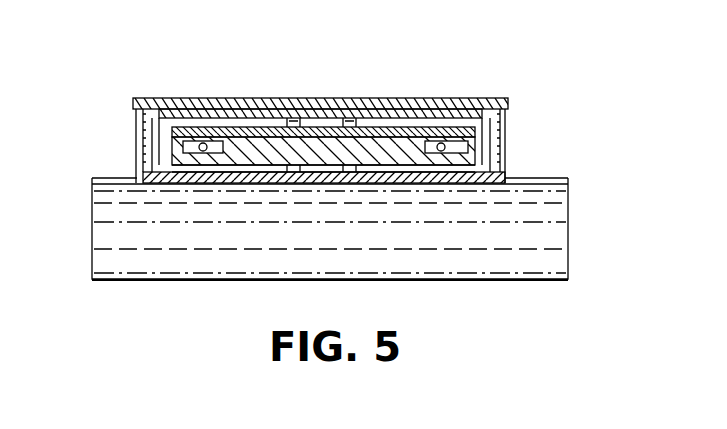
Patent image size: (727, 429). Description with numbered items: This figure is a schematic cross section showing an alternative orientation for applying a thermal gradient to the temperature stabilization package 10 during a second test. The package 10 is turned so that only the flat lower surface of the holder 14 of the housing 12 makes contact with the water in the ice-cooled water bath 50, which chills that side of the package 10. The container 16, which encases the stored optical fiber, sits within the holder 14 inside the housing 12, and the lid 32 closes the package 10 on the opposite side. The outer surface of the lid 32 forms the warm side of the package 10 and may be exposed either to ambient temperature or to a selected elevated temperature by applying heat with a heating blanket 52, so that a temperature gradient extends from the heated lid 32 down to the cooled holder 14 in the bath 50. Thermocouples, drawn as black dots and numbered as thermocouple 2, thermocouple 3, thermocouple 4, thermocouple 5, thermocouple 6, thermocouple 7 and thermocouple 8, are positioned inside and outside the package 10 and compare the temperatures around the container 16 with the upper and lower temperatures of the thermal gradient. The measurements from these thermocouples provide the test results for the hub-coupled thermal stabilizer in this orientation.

The thermocouple 2 is at (323, 169).
The thermocouple 3 is at (325, 126).
The thermocouple 4 is at (473, 139).
The thermocouple 5 is at (165, 152).
The thermocouple 6 is at (499, 233).
The thermocouple 7 is at (503, 55).
The thermocouple 8 is at (323, 106).
The temperature stabilization package 10 is at (436, 74).
The housing 12 is at (110, 158).
The holder 14 is at (505, 162).
The container 16 is at (242, 182).
The lid 32 is at (163, 98).
The ice-cooled water bath 50 is at (548, 262).
The heating blanket 52 is at (191, 98).